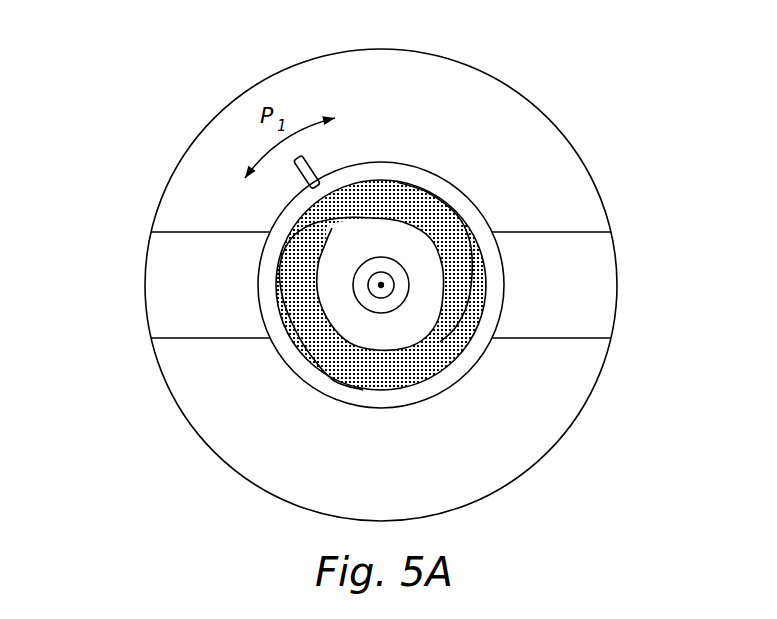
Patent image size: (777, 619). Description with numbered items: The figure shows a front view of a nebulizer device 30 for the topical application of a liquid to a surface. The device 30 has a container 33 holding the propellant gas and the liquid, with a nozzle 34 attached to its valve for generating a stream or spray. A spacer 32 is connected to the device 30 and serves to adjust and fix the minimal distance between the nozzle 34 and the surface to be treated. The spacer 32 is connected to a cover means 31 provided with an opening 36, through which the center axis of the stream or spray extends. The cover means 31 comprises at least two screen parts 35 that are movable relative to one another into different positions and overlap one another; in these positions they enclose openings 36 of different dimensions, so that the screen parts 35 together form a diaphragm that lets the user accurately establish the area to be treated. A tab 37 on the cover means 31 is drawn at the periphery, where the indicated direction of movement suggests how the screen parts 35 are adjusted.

The nebulizer device 30 is at (128, 80).
The cover means 31 is at (418, 172).
The spacer 32 is at (582, 280).
The container 33 is at (542, 162).
The nozzle 34 is at (370, 300).
The screen parts 35 is at (293, 263).
The opening 36 is at (410, 252).
The tab 37 is at (300, 167).